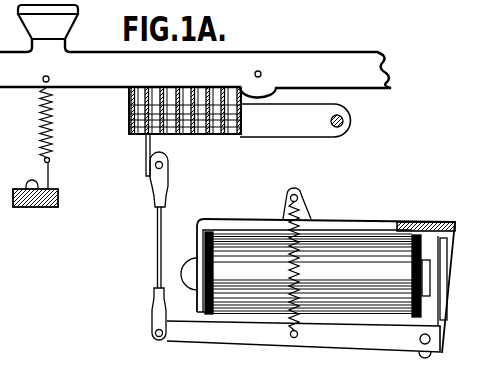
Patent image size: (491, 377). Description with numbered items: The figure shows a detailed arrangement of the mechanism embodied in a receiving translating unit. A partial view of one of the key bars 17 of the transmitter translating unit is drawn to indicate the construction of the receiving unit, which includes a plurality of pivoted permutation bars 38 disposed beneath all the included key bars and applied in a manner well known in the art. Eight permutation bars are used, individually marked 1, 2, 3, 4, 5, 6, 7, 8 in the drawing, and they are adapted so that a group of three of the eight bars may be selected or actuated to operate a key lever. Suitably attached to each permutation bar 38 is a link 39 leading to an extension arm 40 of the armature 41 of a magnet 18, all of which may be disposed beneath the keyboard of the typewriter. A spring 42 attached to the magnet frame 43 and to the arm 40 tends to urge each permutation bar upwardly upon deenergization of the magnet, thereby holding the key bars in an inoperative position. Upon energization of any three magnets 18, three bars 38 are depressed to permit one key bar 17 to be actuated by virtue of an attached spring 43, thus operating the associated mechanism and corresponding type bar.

The key bar 17 is at (287, 62).
The permutation bar 38 is at (226, 119).
The spring / magnet frame 43 is at (53, 127).
The link 39 is at (156, 256).
The extension arm 40 is at (190, 338).
The spring 42 is at (301, 258).
The magnet 18 is at (353, 252).
The armature 41 is at (440, 277).
The contact bar 1 is at (130, 119).
The contact bar 2 is at (145, 119).
The contact bar 3 is at (161, 119).
The contact bar 4 is at (176, 119).
The contact bar 5 is at (192, 119).
The contact bar 6 is at (207, 119).
The contact bar 7 is at (222, 119).
The contact bar 8 is at (237, 119).